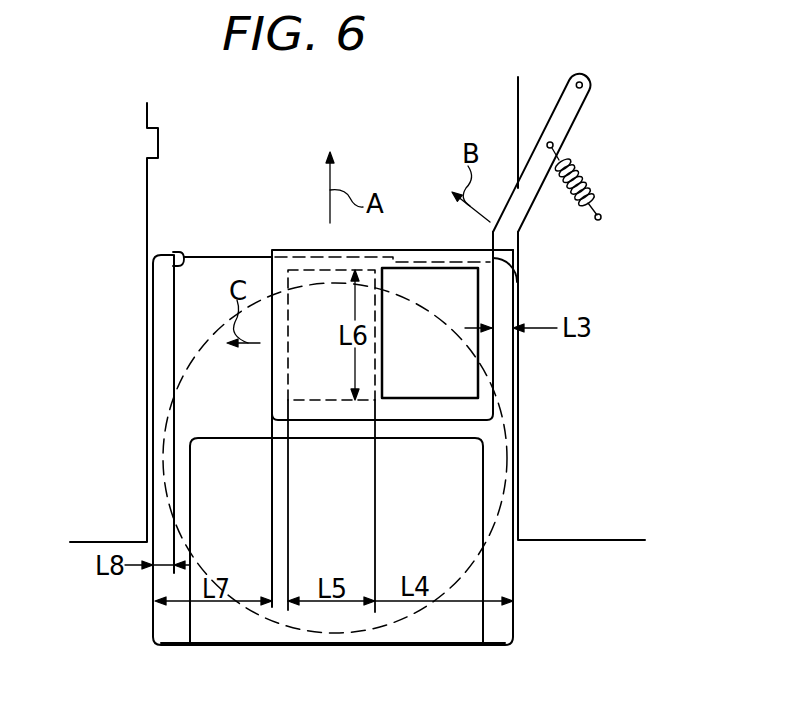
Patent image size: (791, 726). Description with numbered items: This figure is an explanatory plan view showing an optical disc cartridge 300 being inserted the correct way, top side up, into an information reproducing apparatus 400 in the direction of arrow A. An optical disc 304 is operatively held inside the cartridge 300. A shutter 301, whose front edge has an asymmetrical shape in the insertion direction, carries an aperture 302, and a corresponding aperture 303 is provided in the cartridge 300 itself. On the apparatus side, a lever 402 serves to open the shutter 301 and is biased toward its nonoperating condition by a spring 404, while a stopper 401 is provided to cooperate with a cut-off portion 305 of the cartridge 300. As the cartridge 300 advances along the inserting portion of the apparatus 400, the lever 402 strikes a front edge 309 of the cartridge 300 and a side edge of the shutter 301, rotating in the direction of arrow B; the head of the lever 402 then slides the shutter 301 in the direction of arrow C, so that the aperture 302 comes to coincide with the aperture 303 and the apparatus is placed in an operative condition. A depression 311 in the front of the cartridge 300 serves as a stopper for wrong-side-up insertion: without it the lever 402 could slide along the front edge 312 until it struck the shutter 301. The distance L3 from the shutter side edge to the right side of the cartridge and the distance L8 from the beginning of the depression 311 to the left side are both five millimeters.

The optical disc cartridge 300 is at (238, 627).
The shutter 301 is at (300, 253).
The aperture 302 is at (425, 380).
The aperture 303 is at (338, 400).
The optical disc 304 is at (413, 613).
The cut-off portion 305 is at (155, 255).
The front edge 309 is at (517, 282).
The depression 311 is at (181, 259).
The front edge 312 is at (225, 254).
The information reproducing apparatus 400 is at (603, 447).
The stopper 401 is at (150, 143).
The lever 402 is at (568, 113).
The spring 404 is at (589, 186).